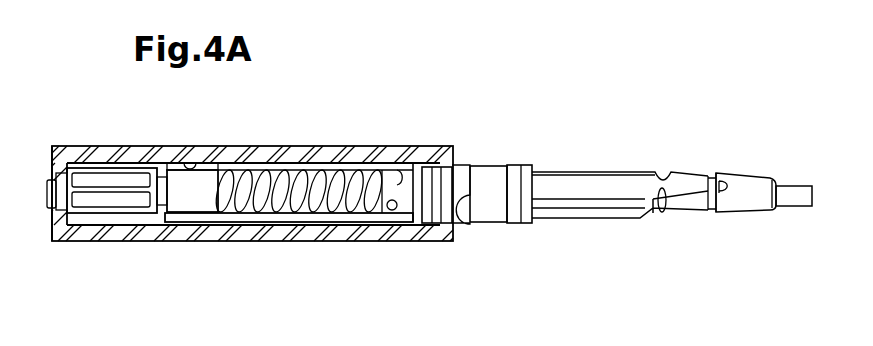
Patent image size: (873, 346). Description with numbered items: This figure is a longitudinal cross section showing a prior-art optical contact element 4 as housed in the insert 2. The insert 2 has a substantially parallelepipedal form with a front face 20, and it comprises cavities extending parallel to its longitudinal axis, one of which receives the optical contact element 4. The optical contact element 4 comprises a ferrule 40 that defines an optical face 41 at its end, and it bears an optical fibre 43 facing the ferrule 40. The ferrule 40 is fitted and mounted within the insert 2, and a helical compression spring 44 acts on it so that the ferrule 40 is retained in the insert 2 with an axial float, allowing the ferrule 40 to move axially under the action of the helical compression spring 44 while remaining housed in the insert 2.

The insert 2 is at (306, 156).
The front face 20 is at (52, 156).
The optical contact element 4 is at (559, 143).
The ferrule 40 is at (127, 205).
The optical face 41 is at (48, 194).
The optical fibre 43 is at (323, 195).
The helical compression spring 44 is at (396, 168).